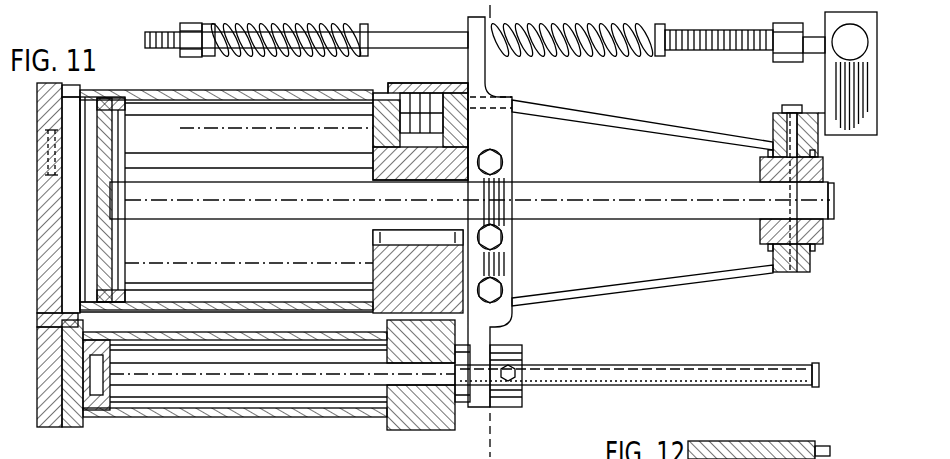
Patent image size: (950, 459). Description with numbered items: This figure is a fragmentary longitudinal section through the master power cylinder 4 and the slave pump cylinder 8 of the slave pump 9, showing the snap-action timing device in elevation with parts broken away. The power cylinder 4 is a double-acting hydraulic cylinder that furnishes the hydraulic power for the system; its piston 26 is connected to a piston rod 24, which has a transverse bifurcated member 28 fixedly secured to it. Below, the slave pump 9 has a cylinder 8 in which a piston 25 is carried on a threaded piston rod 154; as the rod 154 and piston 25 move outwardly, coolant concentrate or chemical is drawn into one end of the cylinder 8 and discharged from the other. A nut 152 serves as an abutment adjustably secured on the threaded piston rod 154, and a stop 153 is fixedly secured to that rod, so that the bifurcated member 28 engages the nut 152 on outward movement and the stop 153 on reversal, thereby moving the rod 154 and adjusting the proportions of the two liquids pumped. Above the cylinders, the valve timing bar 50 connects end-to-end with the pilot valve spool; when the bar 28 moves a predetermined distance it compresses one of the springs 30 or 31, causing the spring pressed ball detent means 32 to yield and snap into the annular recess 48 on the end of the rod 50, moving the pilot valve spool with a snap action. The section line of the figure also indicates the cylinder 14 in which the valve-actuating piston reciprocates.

The master power cylinder 4 is at (264, 143).
The cylinder 8 is at (207, 416).
The slave pump 9 is at (328, 421).
The cylinder 14 is at (493, 12).
The piston rod 24 is at (595, 183).
The piston 25 is at (108, 390).
The piston 26 is at (120, 255).
The transverse bifurcated member 28 is at (510, 262).
The spring 30 is at (640, 55).
The spring 31 is at (222, 53).
The ball detent means 32 is at (846, 48).
The annular recess 48 is at (810, 57).
The valve timing bar 50 is at (432, 45).
The nut 152 is at (522, 398).
The stop 153 is at (466, 403).
The threaded piston rod 154 is at (710, 386).